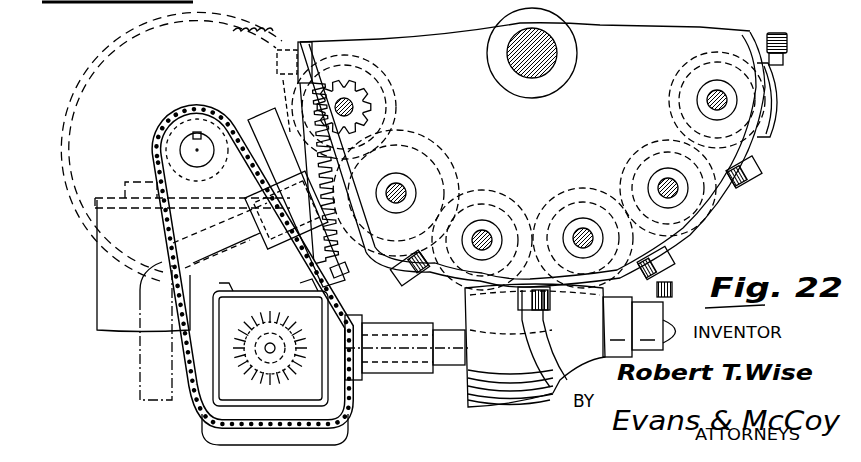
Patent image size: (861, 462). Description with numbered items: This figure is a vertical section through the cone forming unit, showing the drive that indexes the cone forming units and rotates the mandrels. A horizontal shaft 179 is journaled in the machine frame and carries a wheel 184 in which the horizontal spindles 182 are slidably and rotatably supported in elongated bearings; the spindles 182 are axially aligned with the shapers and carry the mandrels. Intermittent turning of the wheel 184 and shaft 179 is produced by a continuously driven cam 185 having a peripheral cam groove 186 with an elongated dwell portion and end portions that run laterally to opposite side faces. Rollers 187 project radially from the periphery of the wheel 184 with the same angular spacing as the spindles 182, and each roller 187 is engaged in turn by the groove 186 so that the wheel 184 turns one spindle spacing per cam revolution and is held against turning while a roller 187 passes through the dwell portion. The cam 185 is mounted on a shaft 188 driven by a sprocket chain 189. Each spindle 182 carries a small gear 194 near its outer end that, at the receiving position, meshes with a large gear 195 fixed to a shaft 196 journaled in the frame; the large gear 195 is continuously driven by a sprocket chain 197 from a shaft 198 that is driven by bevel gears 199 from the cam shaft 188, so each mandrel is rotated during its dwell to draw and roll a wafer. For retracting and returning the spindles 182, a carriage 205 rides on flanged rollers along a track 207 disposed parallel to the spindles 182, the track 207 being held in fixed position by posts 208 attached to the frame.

The horizontal shaft 179 is at (547, 64).
The horizontal spindles 182 is at (355, 104).
The wheel 184 is at (576, 138).
The cam 185 is at (522, 400).
The cam groove 186 is at (537, 322).
The rollers 187 is at (760, 173).
The shaft 188 is at (455, 370).
The sprocket chain 189 is at (677, 290).
The small gear 194 is at (366, 96).
The large gear 195 is at (270, 44).
The shaft 196 is at (183, 147).
The sprocket chain 197 is at (340, 294).
The shaft 198 is at (191, 394).
The bevel gears 199 is at (246, 307).
The carriage 205 is at (256, 126).
The track 207 is at (240, 217).
The posts 208 is at (140, 350).